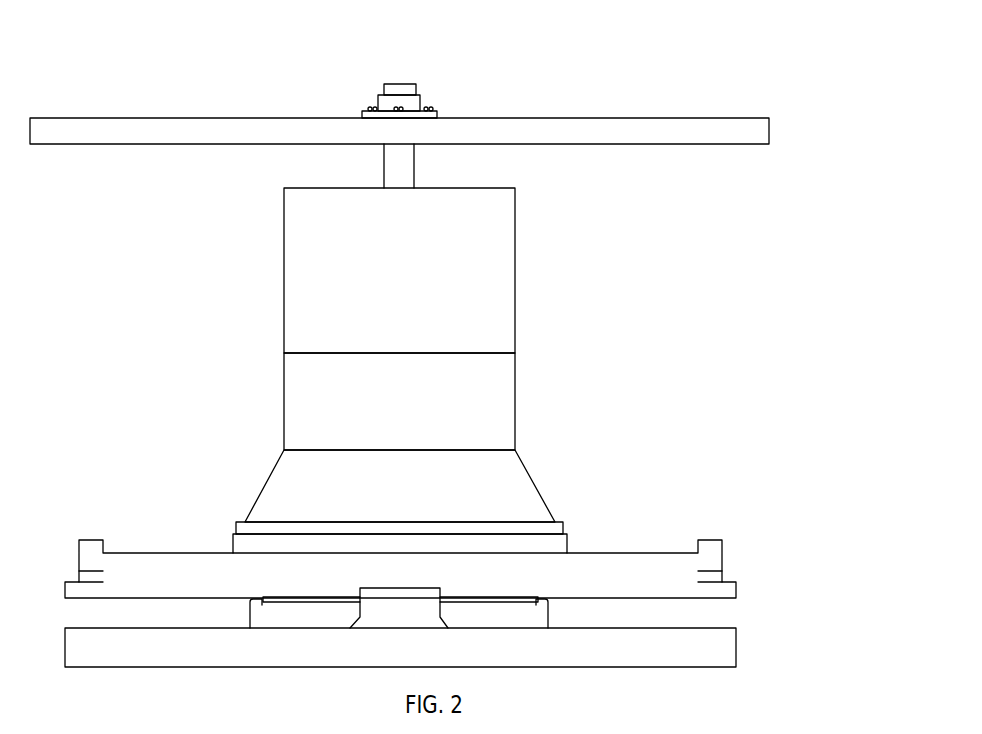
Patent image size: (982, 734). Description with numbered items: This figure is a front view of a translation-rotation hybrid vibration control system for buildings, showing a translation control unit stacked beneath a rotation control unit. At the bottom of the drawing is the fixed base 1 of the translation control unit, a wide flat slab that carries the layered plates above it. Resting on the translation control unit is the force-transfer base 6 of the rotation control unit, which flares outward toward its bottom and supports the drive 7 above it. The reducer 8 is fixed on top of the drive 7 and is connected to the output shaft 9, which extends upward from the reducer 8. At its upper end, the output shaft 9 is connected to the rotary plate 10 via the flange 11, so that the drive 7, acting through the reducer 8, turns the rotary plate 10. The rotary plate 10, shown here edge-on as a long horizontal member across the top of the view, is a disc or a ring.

The fixed base 1 is at (708, 653).
The force-transfer base 6 is at (513, 493).
The drive 7 is at (486, 400).
The reducer 8 is at (480, 287).
The output shaft 9 is at (402, 158).
The rotary plate 10 is at (598, 132).
The flange 11 is at (415, 103).